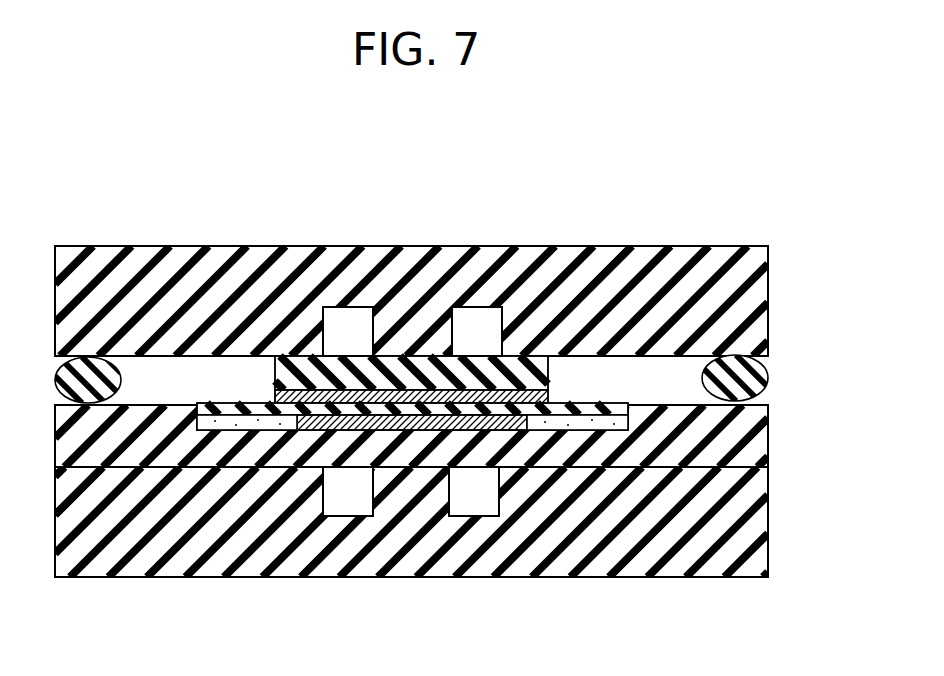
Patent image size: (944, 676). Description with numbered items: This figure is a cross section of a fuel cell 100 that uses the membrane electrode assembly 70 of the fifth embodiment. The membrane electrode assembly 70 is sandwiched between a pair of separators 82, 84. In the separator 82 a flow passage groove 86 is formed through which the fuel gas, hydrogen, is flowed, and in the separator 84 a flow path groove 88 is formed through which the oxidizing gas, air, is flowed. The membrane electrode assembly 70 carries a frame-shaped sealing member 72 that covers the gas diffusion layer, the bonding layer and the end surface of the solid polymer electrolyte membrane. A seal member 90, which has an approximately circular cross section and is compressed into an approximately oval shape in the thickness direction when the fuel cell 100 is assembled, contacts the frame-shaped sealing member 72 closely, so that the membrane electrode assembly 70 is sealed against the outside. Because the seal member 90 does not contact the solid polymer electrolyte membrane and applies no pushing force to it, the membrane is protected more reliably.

The fuel cell 100 is at (702, 198).
The membrane electrode assembly 70 is at (566, 382).
The frame-shaped sealing member 72 is at (688, 445).
The separator 82 is at (214, 257).
The separator 84 is at (249, 556).
The flow passage groove 86 is at (347, 307).
The flow path groove 88 is at (343, 516).
The seal member 90 is at (57, 380).